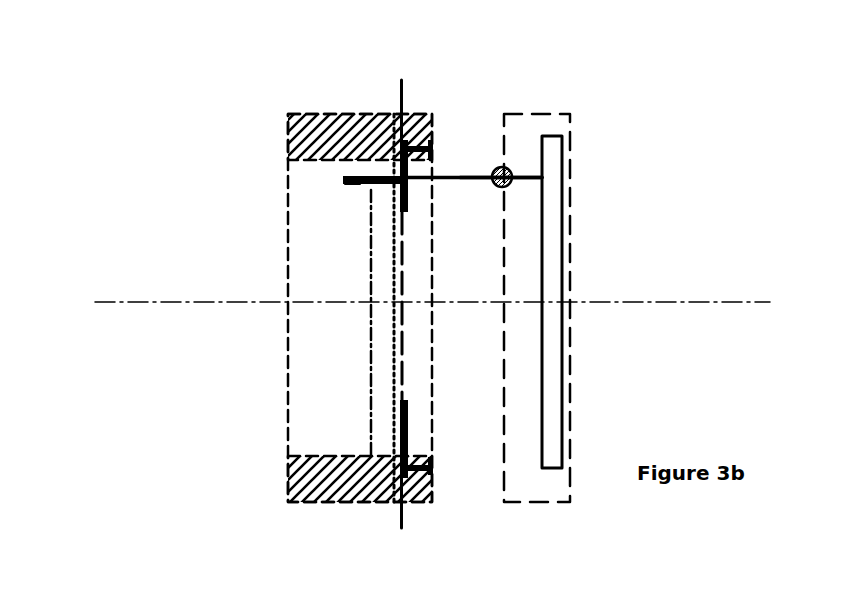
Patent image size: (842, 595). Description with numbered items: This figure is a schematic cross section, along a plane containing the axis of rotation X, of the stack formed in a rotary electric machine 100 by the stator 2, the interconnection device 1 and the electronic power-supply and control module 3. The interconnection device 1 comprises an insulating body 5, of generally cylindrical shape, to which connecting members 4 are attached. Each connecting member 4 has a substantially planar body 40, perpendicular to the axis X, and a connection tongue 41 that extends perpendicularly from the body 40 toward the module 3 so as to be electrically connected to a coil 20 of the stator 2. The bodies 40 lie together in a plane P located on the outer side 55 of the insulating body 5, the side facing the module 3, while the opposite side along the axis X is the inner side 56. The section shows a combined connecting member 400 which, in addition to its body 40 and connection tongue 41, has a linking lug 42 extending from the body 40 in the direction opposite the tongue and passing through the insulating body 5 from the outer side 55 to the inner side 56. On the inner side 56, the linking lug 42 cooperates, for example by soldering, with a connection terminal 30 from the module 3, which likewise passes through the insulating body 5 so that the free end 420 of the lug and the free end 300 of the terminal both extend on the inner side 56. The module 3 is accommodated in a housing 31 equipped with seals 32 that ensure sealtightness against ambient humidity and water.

The rotary electric machine 100 is at (235, 113).
The interconnection device 1 is at (348, 319).
The stator 2 is at (295, 111).
The coil 20 is at (290, 136).
The electronic power-supply and control module 3 is at (562, 252).
The connection terminal 30 is at (467, 178).
The housing 31 is at (545, 103).
The seal 32 is at (512, 168).
The connecting member 4 is at (427, 427).
The body 40 is at (400, 150).
The connection tongue 41 is at (422, 148).
The linking lug 42 is at (357, 190).
The combined connecting member 400 is at (432, 183).
The free end 420 is at (357, 178).
The free end 300 is at (343, 177).
The insulating body 5 is at (363, 353).
The outer side 55 is at (453, 308).
The inner side 56 is at (330, 308).
The plane P is at (398, 100).